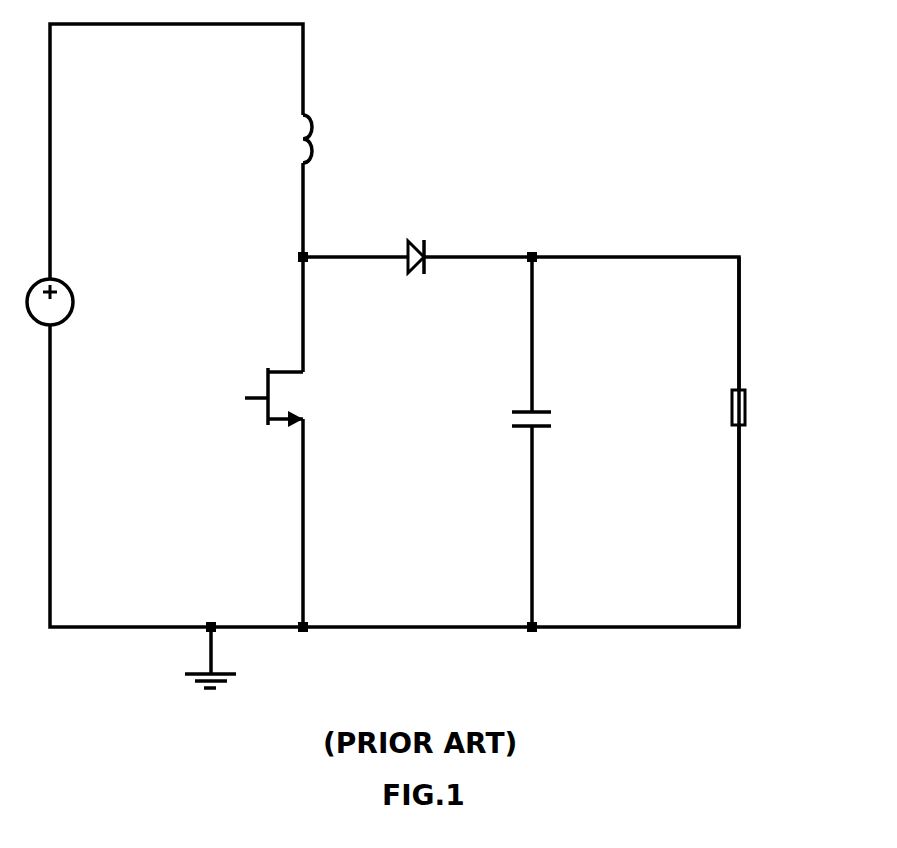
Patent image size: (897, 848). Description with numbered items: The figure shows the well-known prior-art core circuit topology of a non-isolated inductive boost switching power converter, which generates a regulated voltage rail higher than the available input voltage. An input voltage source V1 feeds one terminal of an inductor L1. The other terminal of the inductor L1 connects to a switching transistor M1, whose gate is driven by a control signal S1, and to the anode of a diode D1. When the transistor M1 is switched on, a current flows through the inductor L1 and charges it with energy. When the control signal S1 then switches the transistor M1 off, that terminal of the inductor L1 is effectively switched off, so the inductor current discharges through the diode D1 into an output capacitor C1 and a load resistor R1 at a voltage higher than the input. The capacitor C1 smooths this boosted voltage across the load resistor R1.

The inductor L1 is at (286, 139).
The voltage source V1 is at (70, 299).
The switch control signal S1 is at (237, 403).
The MOSFET switch transistor M1 is at (307, 397).
The diode D1 is at (418, 272).
The capacitor C1 is at (513, 423).
The load resistor R1 is at (760, 411).